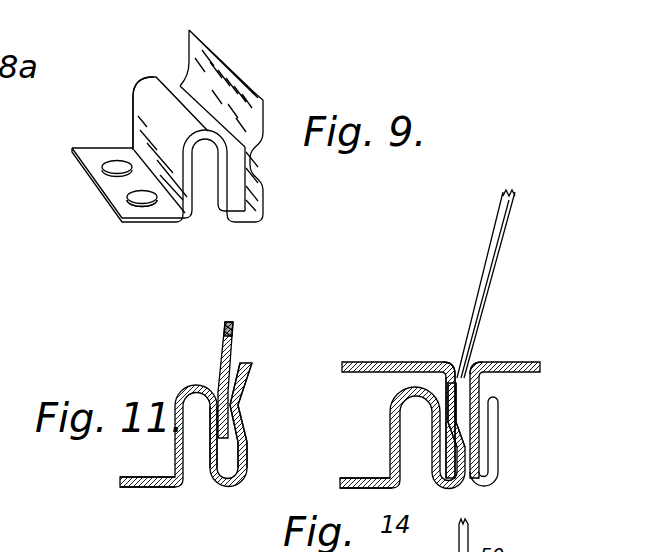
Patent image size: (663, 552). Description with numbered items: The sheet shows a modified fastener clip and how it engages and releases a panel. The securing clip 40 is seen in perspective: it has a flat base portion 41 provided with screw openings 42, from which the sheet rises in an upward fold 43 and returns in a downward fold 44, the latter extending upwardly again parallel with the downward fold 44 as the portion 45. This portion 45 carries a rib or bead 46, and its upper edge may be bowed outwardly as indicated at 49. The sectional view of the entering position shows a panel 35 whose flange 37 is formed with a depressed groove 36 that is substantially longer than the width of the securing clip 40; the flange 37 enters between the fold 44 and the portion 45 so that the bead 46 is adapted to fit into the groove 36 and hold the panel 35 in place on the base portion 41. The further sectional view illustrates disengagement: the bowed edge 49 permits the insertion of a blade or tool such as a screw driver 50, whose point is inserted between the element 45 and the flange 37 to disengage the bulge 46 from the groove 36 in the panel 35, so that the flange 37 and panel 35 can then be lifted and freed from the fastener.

In FIG. 14, the panel 35 is at (402, 362).
In FIG. 11, the depressed groove 36 is at (218, 366).
In FIG. 14, the depressed groove 36 is at (440, 445).
In FIG. 11, the flange 37 is at (232, 325).
In FIG. 9, the securing clip 40 is at (131, 88).
In FIG. 11, the securing clip 40 is at (181, 395).
In FIG. 14, the securing clip 40 is at (390, 402).
In FIG. 9, the flat base portion 41 is at (118, 184).
In FIG. 11, the flat base portion 41 is at (160, 476).
In FIG. 14, the flat base portion 41 is at (370, 478).
In FIG. 9, the screw openings 42 is at (148, 205).
In FIG. 9, the upward fold 43 is at (170, 138).
In FIG. 9, the downward fold 44 is at (223, 176).
In FIG. 11, the downward fold 44 is at (216, 463).
In FIG. 14, the downward fold 44 is at (500, 439).
In FIG. 9, the upwardly extending portion 45 is at (195, 52).
In FIG. 11, the upwardly extending portion 45 is at (248, 445).
In FIG. 9, the rib or bead 46 is at (250, 153).
In FIG. 11, the rib or bead 46 is at (238, 406).
In FIG. 14, the rib or bead 46 is at (440, 428).
In FIG. 14, the outwardly bowed upper edge 49 is at (477, 362).
In FIG. 14, the screw driver 50 is at (484, 262).